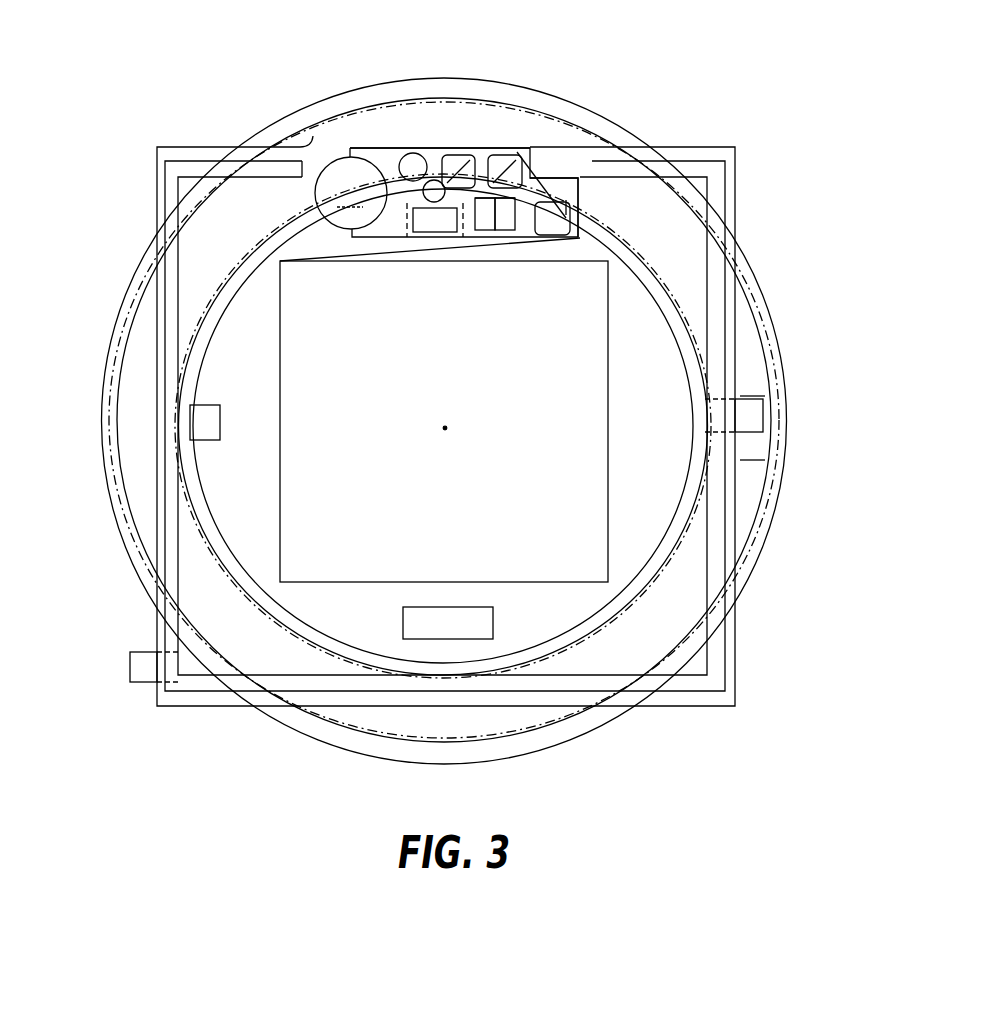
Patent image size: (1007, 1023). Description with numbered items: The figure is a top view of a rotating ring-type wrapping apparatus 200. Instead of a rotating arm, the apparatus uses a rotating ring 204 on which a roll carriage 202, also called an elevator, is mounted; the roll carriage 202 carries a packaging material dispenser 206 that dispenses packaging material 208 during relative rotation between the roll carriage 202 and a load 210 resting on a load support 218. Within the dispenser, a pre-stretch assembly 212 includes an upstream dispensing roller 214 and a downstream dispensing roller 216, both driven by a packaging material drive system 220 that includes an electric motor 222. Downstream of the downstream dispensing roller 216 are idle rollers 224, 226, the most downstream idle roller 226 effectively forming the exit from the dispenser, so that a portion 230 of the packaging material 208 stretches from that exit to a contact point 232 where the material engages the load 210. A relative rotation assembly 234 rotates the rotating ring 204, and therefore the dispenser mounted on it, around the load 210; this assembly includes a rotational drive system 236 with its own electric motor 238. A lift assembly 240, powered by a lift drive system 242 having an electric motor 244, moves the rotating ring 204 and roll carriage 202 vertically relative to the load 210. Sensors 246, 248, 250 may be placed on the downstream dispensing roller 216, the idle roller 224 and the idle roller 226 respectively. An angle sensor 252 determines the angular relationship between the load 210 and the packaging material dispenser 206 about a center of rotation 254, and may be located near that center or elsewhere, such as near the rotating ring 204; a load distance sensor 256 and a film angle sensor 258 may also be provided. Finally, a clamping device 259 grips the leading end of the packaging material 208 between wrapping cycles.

The rotating ring-type wrapping apparatus 200 is at (225, 104).
The roll carriage 202 is at (382, 149).
The rotating ring 204 is at (645, 597).
The packaging material dispenser 206 is at (372, 149).
The packaging material 208 is at (315, 193).
The load 210 is at (428, 424).
The pre-stretch assembly 212 is at (413, 151).
The upstream dispensing roller 214 is at (433, 178).
The downstream dispensing roller 216 is at (472, 150).
The load support 218 is at (627, 299).
The packaging material drive system 220 is at (406, 219).
The electric motor 222 is at (435, 233).
The idle roller 224 is at (530, 146).
The idle roller 226 is at (591, 183).
The portion of packaging material 230 is at (477, 231).
The contact point 232 is at (280, 262).
The relative rotation assembly 234 is at (750, 466).
The rotational drive system 236 is at (753, 394).
The electric motor 238 is at (748, 418).
The lift assembly 240 is at (127, 714).
The lift drive system 242 is at (127, 646).
The electric motor 244 is at (140, 665).
The sensor 246 is at (476, 146).
The sensor 248 is at (566, 200).
The sensor 250 is at (580, 207).
The angle sensor 252 is at (220, 440).
The center of rotation 254 is at (445, 431).
The load distance sensor 256 is at (495, 232).
The film angle sensor 258 is at (515, 232).
The clamping device 259 is at (495, 622).